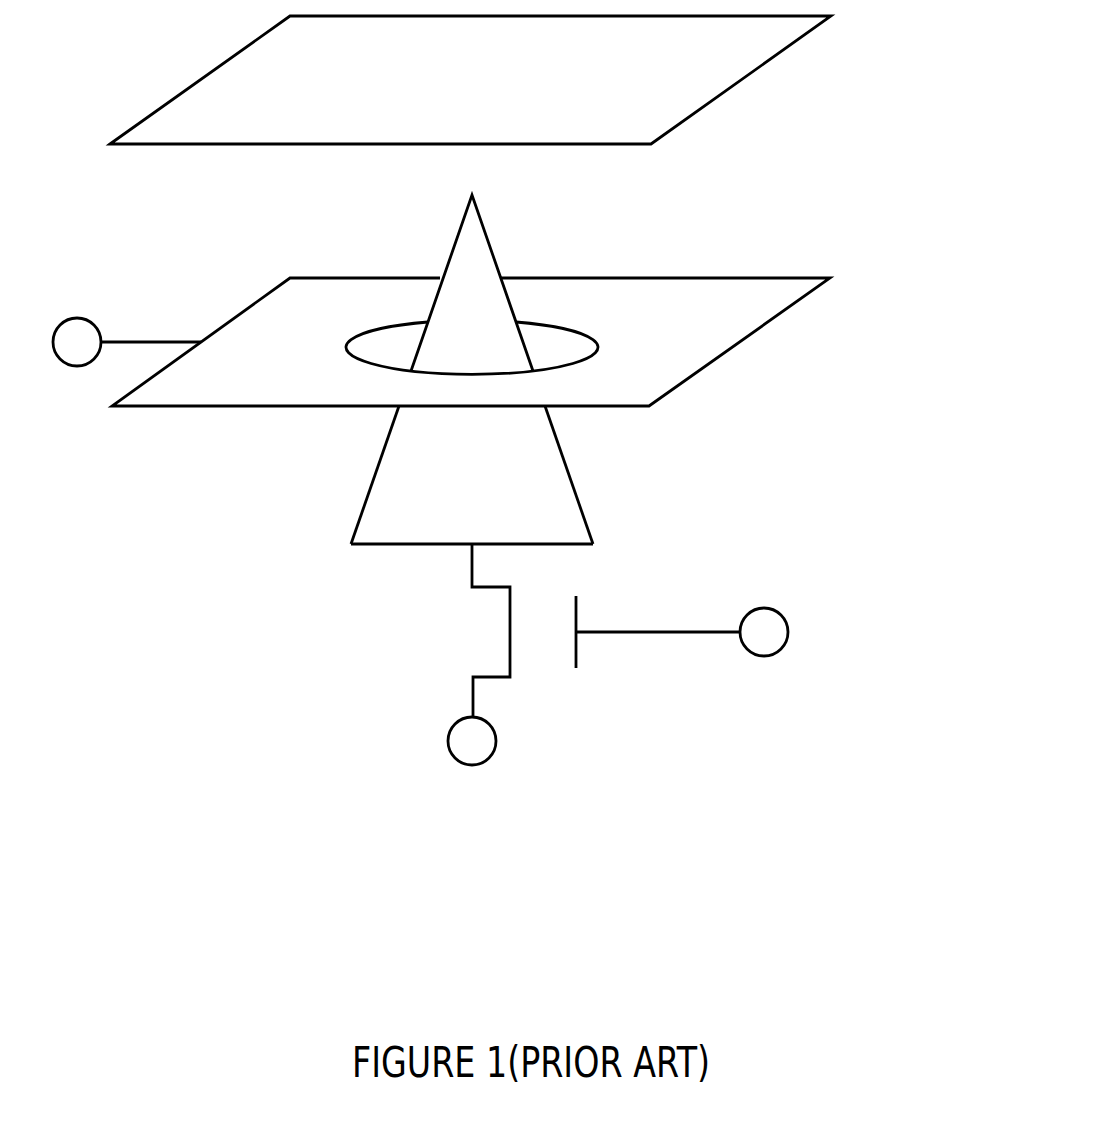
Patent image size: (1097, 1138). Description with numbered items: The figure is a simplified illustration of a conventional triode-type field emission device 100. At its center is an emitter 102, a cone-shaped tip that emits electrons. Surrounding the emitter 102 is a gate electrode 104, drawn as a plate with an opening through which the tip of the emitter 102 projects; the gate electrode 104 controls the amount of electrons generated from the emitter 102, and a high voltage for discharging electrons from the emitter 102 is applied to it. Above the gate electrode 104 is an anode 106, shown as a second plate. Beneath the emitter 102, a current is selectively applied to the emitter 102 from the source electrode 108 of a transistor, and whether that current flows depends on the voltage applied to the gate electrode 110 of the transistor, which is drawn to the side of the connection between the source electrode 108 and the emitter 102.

The field emission device 100 is at (826, 74).
The emitter 102 is at (565, 465).
The gate electrode 104 is at (715, 359).
The anode 106 is at (240, 50).
The source electrode 108 is at (497, 741).
The gate electrode of the transistor 110 is at (788, 632).